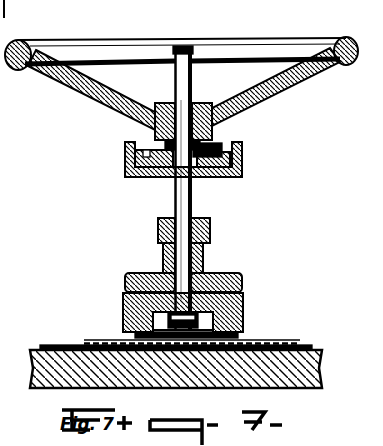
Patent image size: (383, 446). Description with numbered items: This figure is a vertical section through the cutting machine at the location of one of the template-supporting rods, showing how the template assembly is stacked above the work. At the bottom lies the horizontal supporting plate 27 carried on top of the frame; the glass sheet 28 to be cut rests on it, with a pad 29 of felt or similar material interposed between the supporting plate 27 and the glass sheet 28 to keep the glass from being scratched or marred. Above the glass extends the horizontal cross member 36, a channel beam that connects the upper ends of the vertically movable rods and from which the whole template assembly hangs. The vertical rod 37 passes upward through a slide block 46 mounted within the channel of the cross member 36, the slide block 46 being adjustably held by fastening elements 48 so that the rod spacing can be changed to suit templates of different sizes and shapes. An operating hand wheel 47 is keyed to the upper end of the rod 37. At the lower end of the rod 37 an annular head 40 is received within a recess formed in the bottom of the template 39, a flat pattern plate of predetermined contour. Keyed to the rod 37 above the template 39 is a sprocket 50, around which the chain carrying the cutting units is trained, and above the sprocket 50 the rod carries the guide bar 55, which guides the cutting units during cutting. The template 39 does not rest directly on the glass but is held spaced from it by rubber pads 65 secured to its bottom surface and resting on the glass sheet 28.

The horizontal supporting plate 27 is at (310, 360).
The glass sheet 28 is at (108, 340).
The pad 29 is at (64, 335).
The horizontal cross member 36 is at (243, 152).
The vertical rod 37 is at (193, 186).
The template 39 is at (244, 300).
The annular head 40 is at (124, 320).
The slide block 46 is at (131, 179).
The operating hand wheel 47 is at (266, 22).
The fastening elements 48 is at (220, 144).
The sprocket 50 is at (212, 276).
The guide bar 55 is at (211, 226).
The rubber pads 65 is at (243, 334).